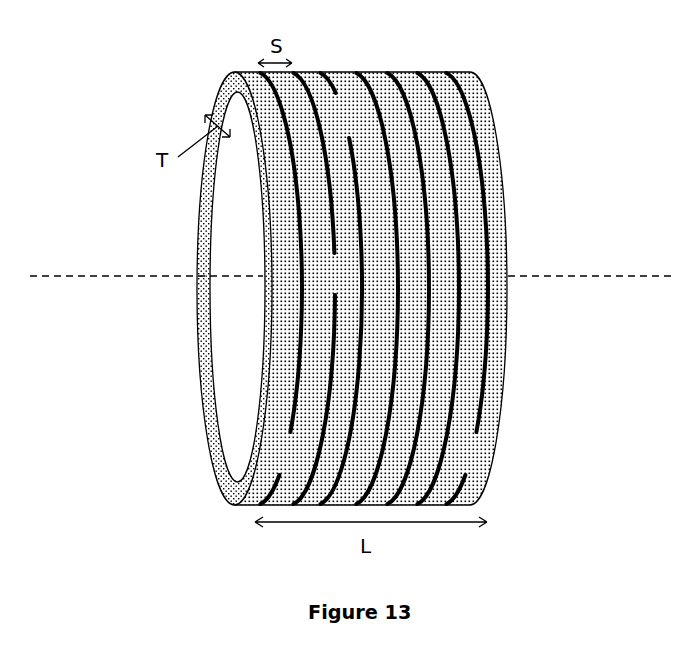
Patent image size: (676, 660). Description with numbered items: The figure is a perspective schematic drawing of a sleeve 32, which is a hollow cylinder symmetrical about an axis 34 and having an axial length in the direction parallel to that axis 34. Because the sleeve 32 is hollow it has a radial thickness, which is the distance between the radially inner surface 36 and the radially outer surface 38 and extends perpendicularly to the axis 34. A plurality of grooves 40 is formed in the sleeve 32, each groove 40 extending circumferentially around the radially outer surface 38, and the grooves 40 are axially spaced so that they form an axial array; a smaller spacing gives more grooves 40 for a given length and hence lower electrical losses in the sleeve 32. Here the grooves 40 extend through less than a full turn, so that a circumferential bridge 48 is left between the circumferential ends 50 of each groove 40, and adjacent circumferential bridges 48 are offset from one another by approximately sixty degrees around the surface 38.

The sleeve 32 is at (488, 125).
The axis 34 is at (145, 277).
The radially inner surface 36 is at (232, 373).
The radially outer surface 38 is at (497, 262).
The grooves 40 is at (487, 197).
The circumferential bridge 48 is at (473, 447).
The circumferential ends 50 is at (482, 423).